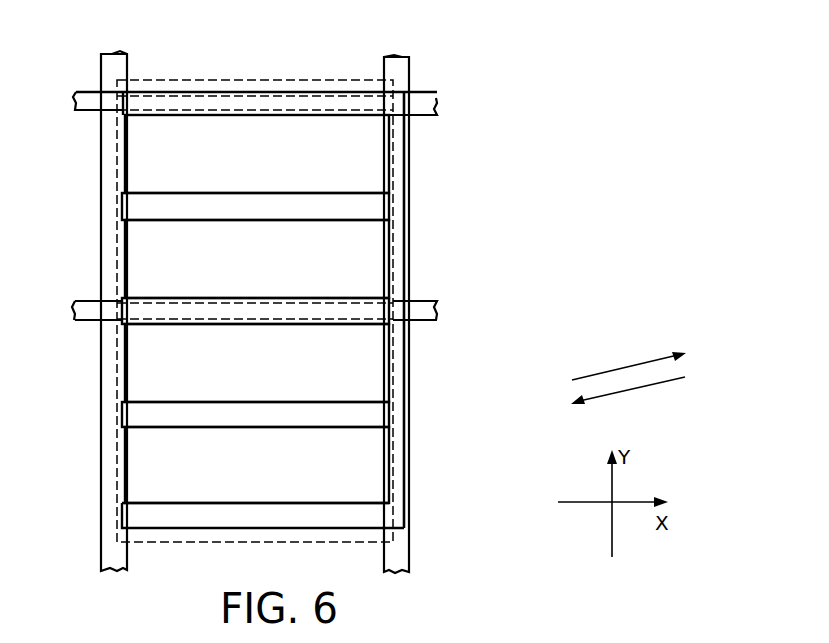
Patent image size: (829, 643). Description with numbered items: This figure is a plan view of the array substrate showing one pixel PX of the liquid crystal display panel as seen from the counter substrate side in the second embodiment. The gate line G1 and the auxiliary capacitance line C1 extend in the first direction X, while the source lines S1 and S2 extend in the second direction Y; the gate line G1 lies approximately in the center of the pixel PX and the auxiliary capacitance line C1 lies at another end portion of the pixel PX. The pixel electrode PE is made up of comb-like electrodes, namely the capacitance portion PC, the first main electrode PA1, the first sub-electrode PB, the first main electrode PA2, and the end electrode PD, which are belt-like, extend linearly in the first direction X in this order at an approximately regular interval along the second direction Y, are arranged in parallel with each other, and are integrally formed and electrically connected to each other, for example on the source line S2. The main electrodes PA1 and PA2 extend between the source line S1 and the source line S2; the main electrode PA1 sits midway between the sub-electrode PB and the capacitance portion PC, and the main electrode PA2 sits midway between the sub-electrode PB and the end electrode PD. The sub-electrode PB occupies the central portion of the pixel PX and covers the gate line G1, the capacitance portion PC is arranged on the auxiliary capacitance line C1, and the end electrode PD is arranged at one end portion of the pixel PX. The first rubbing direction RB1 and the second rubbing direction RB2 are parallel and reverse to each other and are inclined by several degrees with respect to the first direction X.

The source line S1 is at (114, 54).
The source line S2 is at (397, 57).
The pixel PX is at (286, 80).
The auxiliary capacitance line C1 is at (74, 100).
The gate line G1 is at (74, 309).
The capacitance portion PC is at (233, 116).
The first main electrode PA1 is at (250, 221).
The first sub-electrode PB is at (230, 325).
The first main electrode PA2 is at (250, 429).
The end electrode PD is at (317, 503).
The pixel electrode PE is at (191, 432).
The first rubbing direction RB1 is at (643, 388).
The second rubbing direction RB2 is at (633, 365).